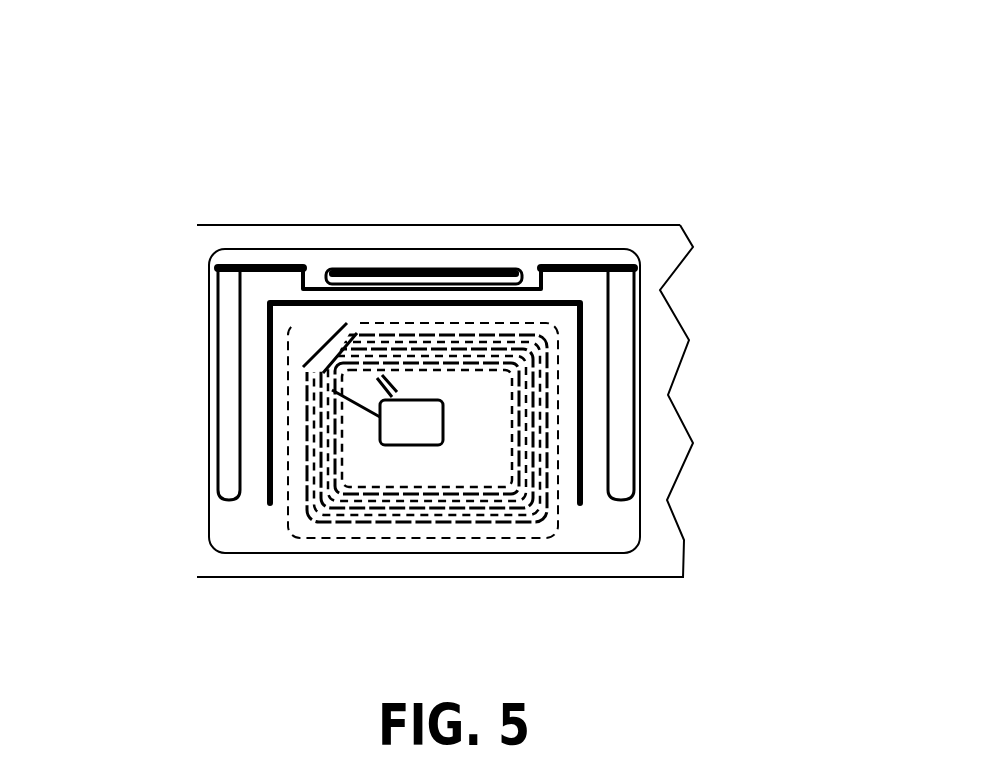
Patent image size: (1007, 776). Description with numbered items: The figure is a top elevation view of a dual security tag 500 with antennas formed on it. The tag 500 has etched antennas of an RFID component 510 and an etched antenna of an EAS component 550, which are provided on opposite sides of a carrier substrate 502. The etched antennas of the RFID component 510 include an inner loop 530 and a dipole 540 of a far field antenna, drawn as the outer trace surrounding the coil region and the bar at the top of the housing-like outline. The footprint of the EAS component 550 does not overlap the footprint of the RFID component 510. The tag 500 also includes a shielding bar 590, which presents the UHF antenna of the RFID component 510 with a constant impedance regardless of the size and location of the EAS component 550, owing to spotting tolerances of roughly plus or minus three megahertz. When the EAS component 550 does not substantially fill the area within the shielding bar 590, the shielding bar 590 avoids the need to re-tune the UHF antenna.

The tag 500 is at (499, 75).
The carrier substrate 502 is at (245, 225).
The RFID component 510 is at (182, 436).
The inner loop 530 is at (230, 358).
The dipole 540 is at (457, 268).
The EAS component 550 is at (417, 528).
The shielding bar 590 is at (270, 505).